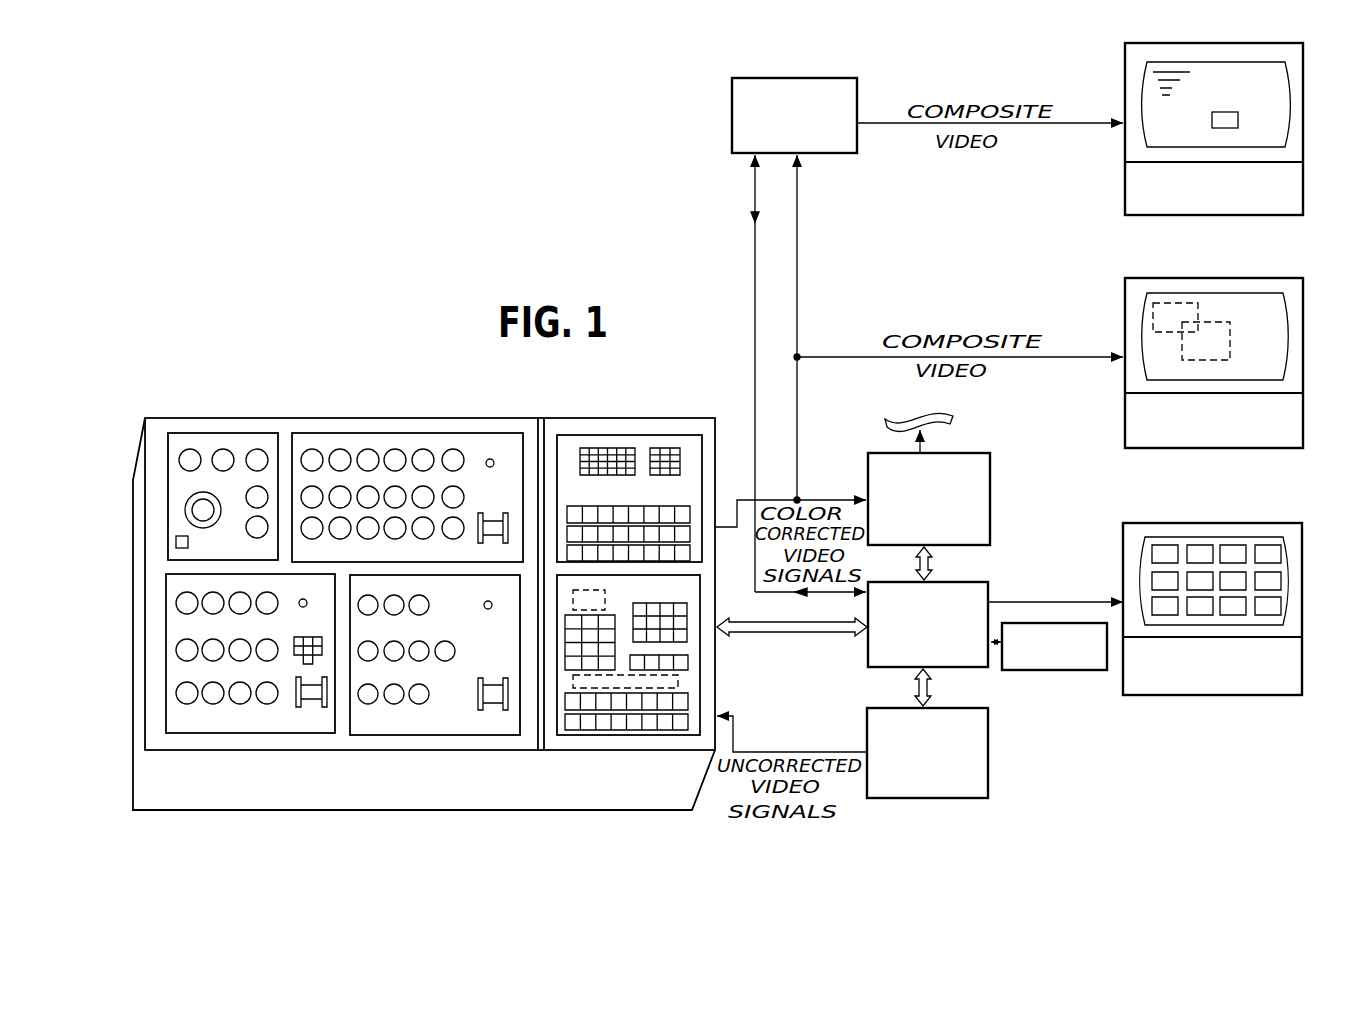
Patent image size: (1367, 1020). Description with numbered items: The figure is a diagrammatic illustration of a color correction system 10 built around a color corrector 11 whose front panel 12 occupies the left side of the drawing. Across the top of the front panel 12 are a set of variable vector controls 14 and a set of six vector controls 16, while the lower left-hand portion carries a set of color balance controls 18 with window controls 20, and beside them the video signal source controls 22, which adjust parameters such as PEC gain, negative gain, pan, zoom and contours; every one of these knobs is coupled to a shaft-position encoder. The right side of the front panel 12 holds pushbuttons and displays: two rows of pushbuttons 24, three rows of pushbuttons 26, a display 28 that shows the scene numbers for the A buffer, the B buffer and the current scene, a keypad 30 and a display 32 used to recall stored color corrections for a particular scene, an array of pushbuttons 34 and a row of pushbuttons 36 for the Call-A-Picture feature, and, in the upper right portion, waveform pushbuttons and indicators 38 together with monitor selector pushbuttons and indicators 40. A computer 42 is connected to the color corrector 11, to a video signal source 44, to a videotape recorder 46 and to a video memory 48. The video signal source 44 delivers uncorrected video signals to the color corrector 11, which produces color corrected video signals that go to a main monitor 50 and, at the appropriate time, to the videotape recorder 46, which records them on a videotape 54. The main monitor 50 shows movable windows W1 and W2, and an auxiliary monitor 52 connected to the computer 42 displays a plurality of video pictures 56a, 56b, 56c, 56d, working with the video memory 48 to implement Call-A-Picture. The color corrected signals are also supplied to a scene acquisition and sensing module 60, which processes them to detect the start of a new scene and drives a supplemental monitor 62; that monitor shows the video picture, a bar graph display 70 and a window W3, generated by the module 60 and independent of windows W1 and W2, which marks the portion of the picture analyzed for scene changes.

The color correction system 10 is at (372, 270).
The color corrector 11 is at (412, 418).
The front panel 12 is at (536, 432).
The variable vector controls 14 is at (185, 433).
The six vector controls 16 is at (309, 433).
The color balance controls 18 is at (190, 733).
The window controls 20 is at (322, 623).
The video signal source controls 22 is at (368, 733).
The two rows of pushbuttons 24 is at (582, 730).
The three rows of pushbuttons 26 is at (612, 506).
The display 28 is at (680, 683).
The keypad 30 is at (622, 614).
The display 32 is at (600, 590).
The array of pushbuttons 34 is at (685, 603).
The row of pushbuttons 36 is at (692, 662).
The waveform pushbuttons and indicators 38 is at (590, 447).
The monitor selector pushbuttons and indicators 40 is at (666, 447).
The computer 42 is at (985, 582).
The video signal source 44 is at (988, 787).
The videotape recorder 46 is at (990, 440).
The video memory 48 is at (1060, 670).
The main monitor 50 is at (1238, 448).
The auxiliary monitor 52 is at (1180, 695).
The videotape 54 is at (948, 392).
The video picture 56a is at (1163, 545).
The video picture 56b is at (1195, 545).
The video picture 56c is at (1235, 545).
The video picture 56d is at (1268, 545).
The scene acquisition and sensing module 60 is at (794, 78).
The supplemental monitor 62 is at (1222, 215).
The bar graph display 70 is at (1190, 88).
The window W1 is at (1200, 308).
The window W2 is at (1232, 337).
The window W3 is at (1238, 120).